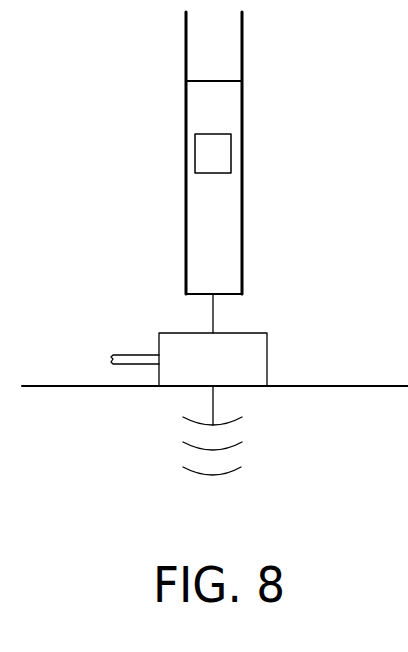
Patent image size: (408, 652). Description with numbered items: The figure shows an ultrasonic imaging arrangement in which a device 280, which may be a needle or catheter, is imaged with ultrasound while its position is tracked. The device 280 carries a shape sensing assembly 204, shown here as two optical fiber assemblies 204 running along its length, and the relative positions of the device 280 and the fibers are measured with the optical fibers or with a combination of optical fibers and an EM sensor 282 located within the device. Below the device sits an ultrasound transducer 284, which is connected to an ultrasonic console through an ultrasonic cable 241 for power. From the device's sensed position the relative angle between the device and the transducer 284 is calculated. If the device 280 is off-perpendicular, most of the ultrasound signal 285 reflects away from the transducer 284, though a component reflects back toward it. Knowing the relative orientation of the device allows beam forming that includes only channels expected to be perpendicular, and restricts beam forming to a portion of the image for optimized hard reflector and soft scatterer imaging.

The shape sensing assembly 204 is at (185, 42).
The device 280 is at (212, 172).
The EM sensor 282 is at (222, 156).
The ultrasound transducer 284 is at (262, 357).
The ultrasonic cable 241 is at (129, 359).
The ultrasound signal 285 is at (235, 471).